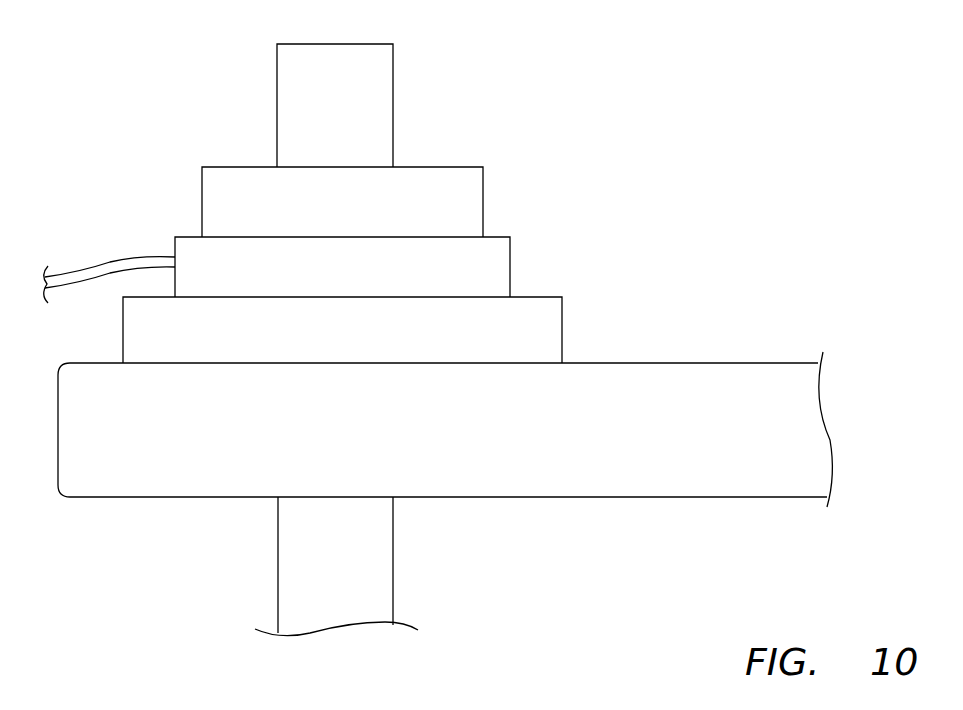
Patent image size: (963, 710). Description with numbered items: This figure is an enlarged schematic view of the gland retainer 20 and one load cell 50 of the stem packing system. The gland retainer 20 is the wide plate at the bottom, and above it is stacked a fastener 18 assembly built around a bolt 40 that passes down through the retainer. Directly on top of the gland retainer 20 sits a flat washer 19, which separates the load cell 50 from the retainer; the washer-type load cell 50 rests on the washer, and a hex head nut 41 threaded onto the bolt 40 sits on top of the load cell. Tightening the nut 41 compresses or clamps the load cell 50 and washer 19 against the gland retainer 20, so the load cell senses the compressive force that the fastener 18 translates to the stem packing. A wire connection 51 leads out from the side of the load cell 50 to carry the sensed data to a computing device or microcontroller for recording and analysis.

The fastener 18 is at (425, 57).
The flat washer 19 is at (562, 325).
The gland retainer 20 is at (613, 497).
The bolt 40 is at (393, 142).
The nut 41 is at (483, 212).
The load cell 50 is at (510, 263).
The wire connection 51 is at (102, 260).